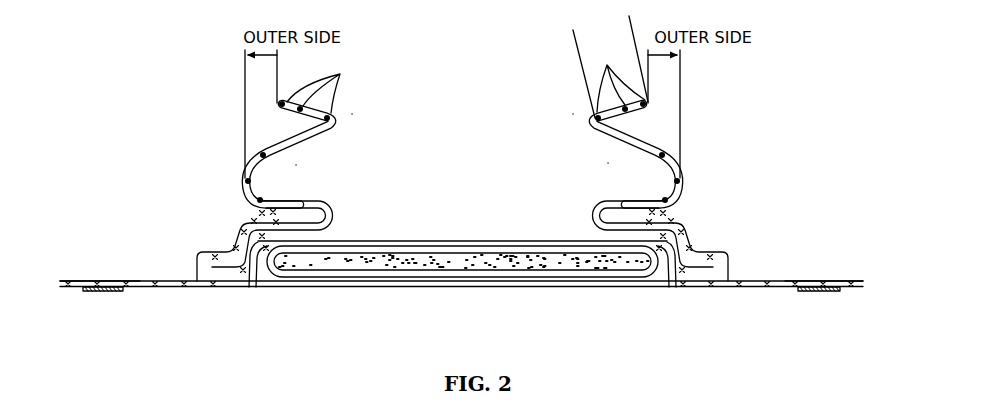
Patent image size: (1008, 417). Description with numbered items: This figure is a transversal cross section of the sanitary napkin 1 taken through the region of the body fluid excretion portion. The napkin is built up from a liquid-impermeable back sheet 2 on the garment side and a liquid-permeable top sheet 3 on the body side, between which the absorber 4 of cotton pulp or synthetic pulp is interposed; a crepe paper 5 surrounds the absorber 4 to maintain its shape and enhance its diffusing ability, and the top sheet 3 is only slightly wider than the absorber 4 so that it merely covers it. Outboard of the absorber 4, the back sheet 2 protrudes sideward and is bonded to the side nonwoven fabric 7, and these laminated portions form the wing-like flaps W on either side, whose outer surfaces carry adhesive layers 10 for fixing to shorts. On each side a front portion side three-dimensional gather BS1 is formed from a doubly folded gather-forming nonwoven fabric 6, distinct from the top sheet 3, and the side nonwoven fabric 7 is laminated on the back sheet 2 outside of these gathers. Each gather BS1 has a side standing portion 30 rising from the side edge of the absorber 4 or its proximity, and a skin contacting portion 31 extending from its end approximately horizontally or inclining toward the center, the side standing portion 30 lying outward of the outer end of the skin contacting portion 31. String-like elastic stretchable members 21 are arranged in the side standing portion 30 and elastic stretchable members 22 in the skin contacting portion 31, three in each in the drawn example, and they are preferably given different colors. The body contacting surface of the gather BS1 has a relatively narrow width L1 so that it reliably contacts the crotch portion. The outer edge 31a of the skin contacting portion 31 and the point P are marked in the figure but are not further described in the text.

The sanitary napkin 1 is at (461, 231).
The liquid-impermeable back sheet 2 is at (608, 288).
The liquid-permeable top sheet 3 is at (522, 241).
The absorber 4 is at (468, 262).
The crepe paper 5 is at (528, 250).
The three-dimensional gather-forming nonwoven fabric 6 is at (338, 208).
The side nonwoven fabric 7 is at (203, 250).
The adhesive layer 10 is at (114, 292).
The elastic stretchable member 21 is at (261, 199).
The elastic stretchable member 22 is at (466, 78).
The side standing portion 30 is at (236, 148).
The skin contacting portion 31 is at (293, 118).
The outer edge of tip portion 31a is at (282, 104).
The fold point P is at (298, 163).
The front portion side three-dimensional gather BS1 is at (355, 112).
The width of body contacting surface L1 is at (629, 17).
The wing-like flap W is at (134, 278).